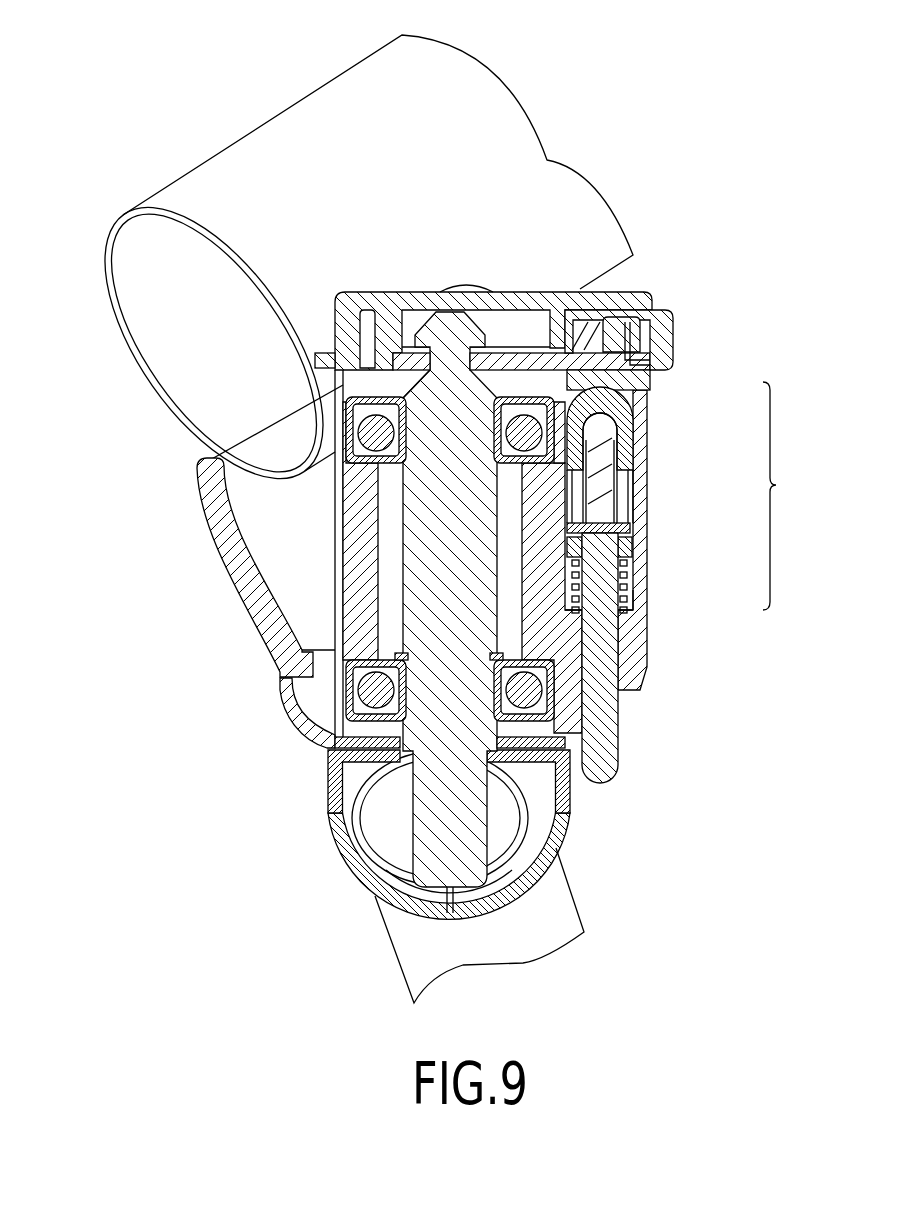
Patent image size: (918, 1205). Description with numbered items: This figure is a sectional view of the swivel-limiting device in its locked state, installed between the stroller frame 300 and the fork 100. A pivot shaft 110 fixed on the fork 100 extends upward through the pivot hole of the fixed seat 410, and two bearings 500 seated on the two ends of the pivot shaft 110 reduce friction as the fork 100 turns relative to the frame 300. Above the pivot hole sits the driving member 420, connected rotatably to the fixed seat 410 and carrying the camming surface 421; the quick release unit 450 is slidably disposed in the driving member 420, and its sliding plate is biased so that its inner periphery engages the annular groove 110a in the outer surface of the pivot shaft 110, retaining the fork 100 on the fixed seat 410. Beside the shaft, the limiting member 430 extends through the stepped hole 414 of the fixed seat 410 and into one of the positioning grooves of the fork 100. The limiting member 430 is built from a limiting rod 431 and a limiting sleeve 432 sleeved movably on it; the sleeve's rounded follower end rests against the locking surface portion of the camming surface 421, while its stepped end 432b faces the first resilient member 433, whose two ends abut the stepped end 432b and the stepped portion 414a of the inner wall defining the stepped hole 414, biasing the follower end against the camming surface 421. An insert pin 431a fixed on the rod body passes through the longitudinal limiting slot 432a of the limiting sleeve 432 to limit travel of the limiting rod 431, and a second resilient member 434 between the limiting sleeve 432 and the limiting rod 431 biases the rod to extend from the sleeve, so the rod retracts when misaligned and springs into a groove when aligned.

The frame 300 is at (527, 184).
The fork 100 is at (533, 922).
The pivot shaft 110 is at (458, 800).
The annular groove 110a is at (418, 373).
The driving member 420 is at (620, 296).
The fixed seat 410 is at (562, 667).
The bearing 500 is at (517, 432).
The quick release unit 450 is at (628, 338).
The camming surface 421 is at (620, 381).
The limiting member 430 is at (793, 496).
The limiting sleeve 432 is at (628, 427).
The second resilient member 434 is at (620, 446).
The limiting slot 432a is at (622, 487).
The insert pin 431a is at (620, 521).
The stepped end 432b is at (628, 542).
The first resilient member 433 is at (623, 572).
The limiting rod 431 is at (607, 578).
The stepped hole 414 is at (630, 600).
The stepped portion 414a is at (640, 600).